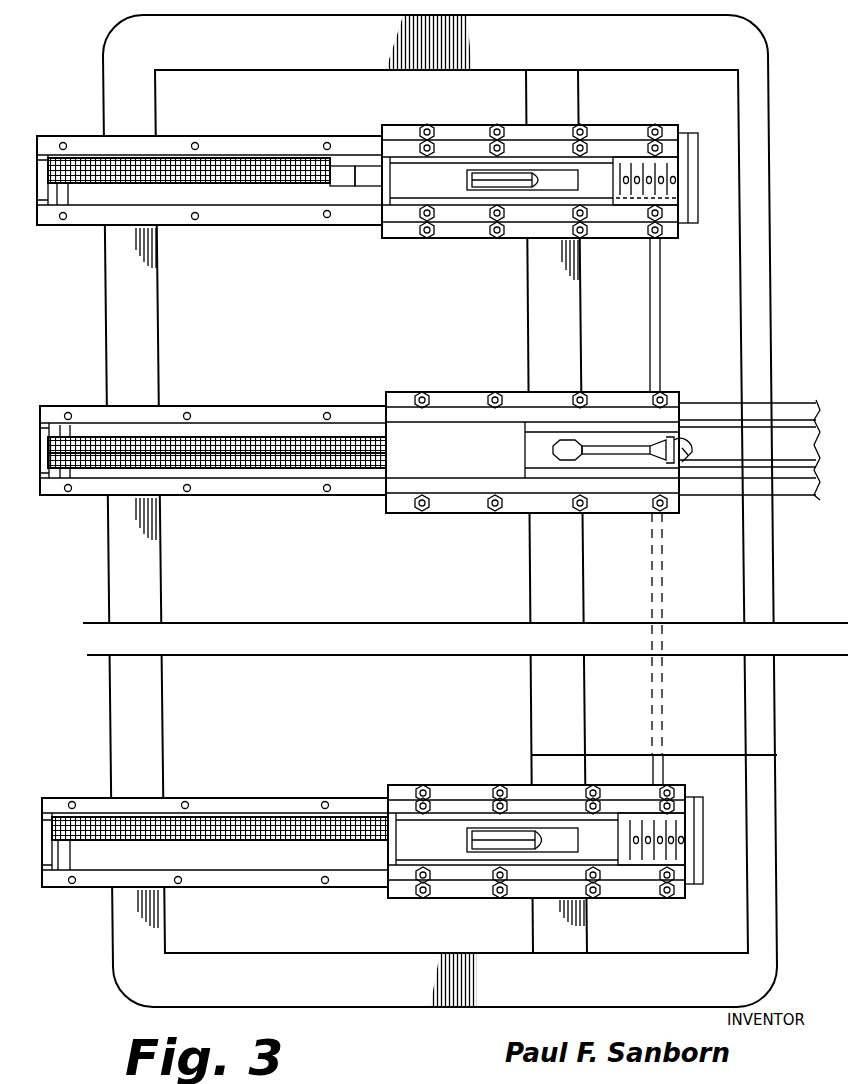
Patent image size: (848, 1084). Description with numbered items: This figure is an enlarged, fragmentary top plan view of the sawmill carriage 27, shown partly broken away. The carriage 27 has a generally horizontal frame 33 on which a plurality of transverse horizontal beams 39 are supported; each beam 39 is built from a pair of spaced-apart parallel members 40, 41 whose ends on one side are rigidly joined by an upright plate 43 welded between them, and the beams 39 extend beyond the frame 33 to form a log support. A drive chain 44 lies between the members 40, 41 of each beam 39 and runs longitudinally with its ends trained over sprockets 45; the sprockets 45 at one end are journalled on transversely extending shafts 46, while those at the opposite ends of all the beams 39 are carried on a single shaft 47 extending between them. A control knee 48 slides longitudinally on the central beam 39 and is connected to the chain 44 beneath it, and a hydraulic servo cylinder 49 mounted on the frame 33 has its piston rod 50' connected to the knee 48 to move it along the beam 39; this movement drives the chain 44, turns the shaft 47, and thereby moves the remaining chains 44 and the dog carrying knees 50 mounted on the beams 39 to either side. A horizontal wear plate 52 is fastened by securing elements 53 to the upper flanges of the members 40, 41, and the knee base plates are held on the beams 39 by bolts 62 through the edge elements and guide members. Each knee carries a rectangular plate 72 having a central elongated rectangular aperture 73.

The carriage 27 is at (432, 1014).
The frame 33 is at (125, 990).
The horizontal beams 39 is at (270, 126).
The transverse parallel member 40 is at (248, 872).
The transverse parallel member 41 is at (212, 814).
The upright plate 43 is at (700, 836).
The drive chain 44 is at (192, 200).
The sprockets 45 is at (60, 185).
The transversely extending shafts 46 is at (72, 190).
The single shaft 47 is at (661, 312).
The control knee 48 is at (459, 517).
The hydraulic servo cylinder 49 is at (712, 434).
The dog carrying knees 50 is at (511, 492).
The piston rod 50' is at (613, 408).
The horizontal wear plate 52 is at (178, 143).
The securing elements 53 is at (327, 218).
The bolt 62 is at (436, 130).
The rectangular plate 72 is at (447, 850).
The rectangular aperture 73 is at (553, 848).